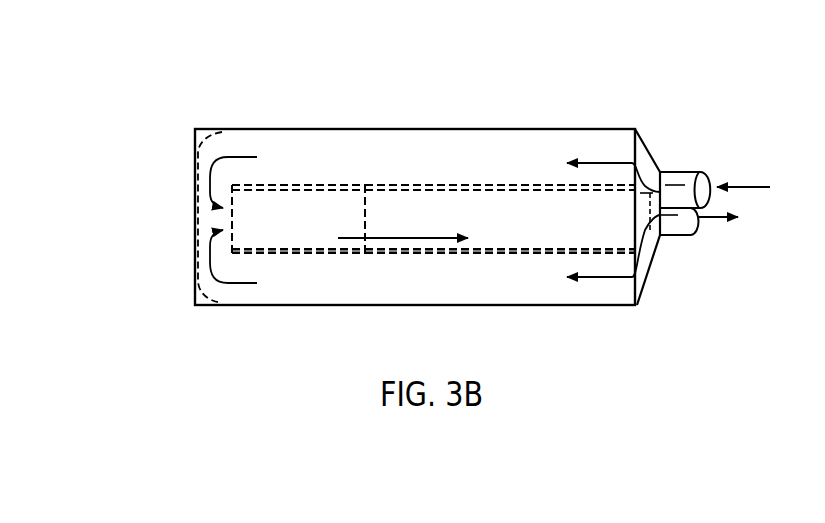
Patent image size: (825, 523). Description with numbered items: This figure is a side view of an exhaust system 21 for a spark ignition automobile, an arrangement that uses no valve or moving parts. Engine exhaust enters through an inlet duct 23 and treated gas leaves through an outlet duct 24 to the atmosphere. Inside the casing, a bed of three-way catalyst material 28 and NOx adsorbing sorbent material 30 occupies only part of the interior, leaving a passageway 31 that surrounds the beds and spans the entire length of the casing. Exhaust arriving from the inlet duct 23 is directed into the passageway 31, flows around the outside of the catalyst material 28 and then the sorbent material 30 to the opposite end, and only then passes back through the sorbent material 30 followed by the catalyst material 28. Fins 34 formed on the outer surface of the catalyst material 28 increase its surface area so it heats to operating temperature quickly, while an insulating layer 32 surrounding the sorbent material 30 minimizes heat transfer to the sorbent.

The exhaust system 21 is at (240, 105).
The engine exhaust inlet duct 23 is at (677, 178).
The outlet duct 24 is at (670, 235).
The three-way catalyst material 28 is at (488, 186).
The NOx adsorbing sorbent material 30 is at (357, 186).
The passageway 31 is at (288, 166).
The insulating layer 32 is at (303, 254).
The fins 34 is at (450, 254).